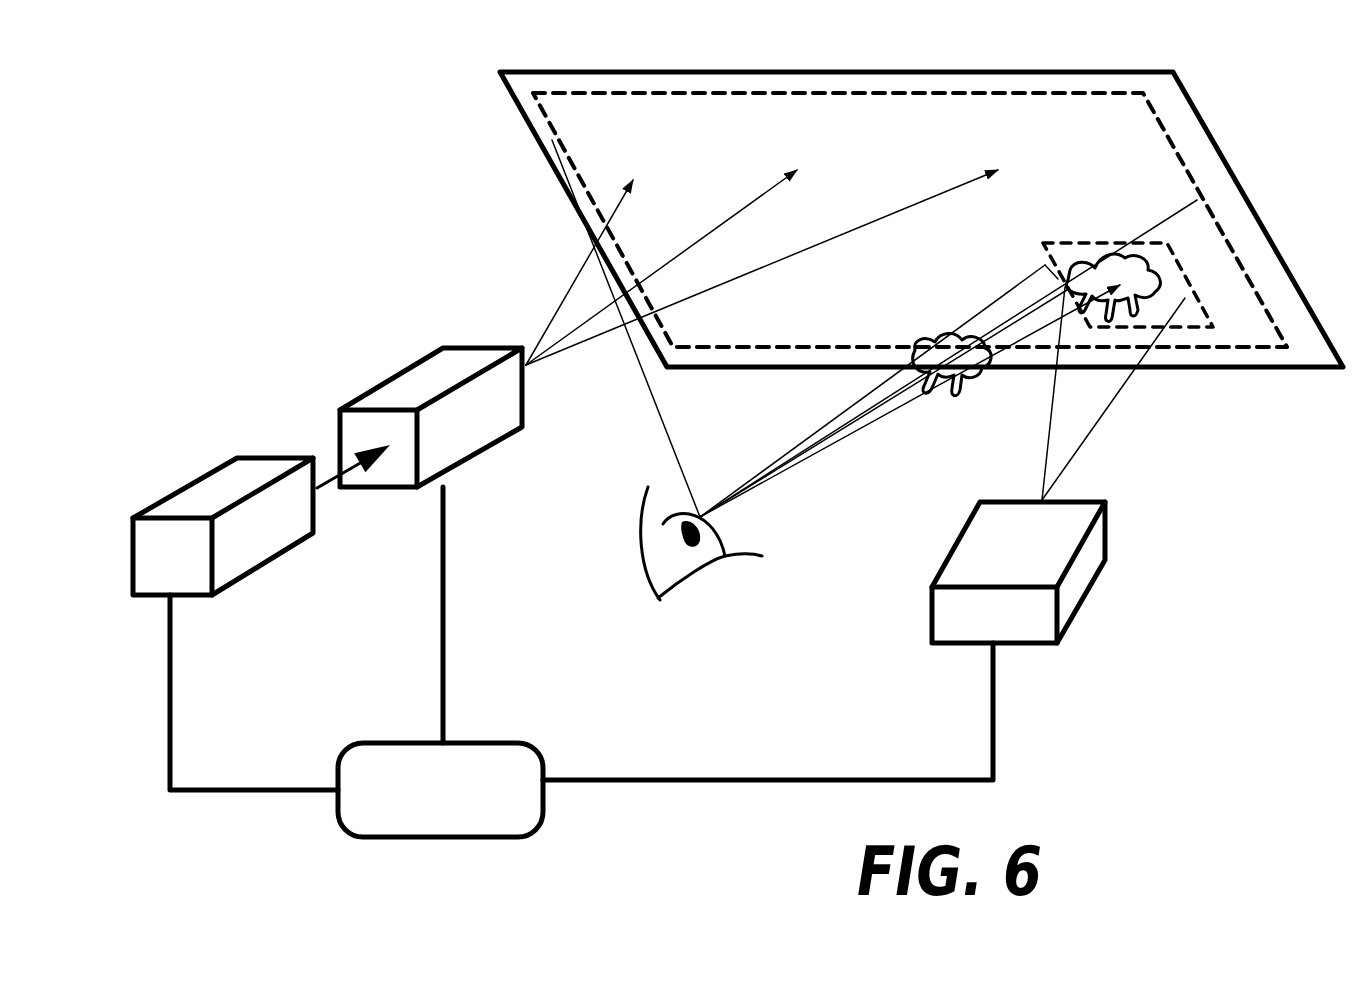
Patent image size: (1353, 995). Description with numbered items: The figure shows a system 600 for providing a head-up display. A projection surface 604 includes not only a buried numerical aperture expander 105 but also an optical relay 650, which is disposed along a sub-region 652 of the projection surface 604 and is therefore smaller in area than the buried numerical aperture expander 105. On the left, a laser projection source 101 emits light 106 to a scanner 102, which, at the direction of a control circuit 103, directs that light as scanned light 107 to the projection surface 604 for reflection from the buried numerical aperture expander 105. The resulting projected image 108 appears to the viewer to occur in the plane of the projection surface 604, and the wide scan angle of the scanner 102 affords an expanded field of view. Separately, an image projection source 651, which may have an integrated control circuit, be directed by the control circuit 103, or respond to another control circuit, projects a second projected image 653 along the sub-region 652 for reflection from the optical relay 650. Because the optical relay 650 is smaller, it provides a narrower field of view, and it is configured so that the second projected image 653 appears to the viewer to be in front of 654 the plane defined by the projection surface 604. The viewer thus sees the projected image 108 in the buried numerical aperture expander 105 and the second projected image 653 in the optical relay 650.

The system 600 is at (226, 293).
The projection surface 604 is at (588, 72).
The buried numerical aperture expander 105 is at (552, 140).
The projected image 108 is at (877, 153).
The scanned light 107 is at (550, 320).
The scanner 102 is at (412, 393).
The light 106 is at (328, 468).
The laser projection source 101 is at (217, 497).
The control circuit 103 is at (412, 808).
The optical relay 650 is at (1183, 330).
The image projection source 651 is at (1077, 573).
The sub-region 652 is at (1038, 263).
The second projected image 653 is at (1183, 300).
The in front of the plane 654 is at (1023, 327).